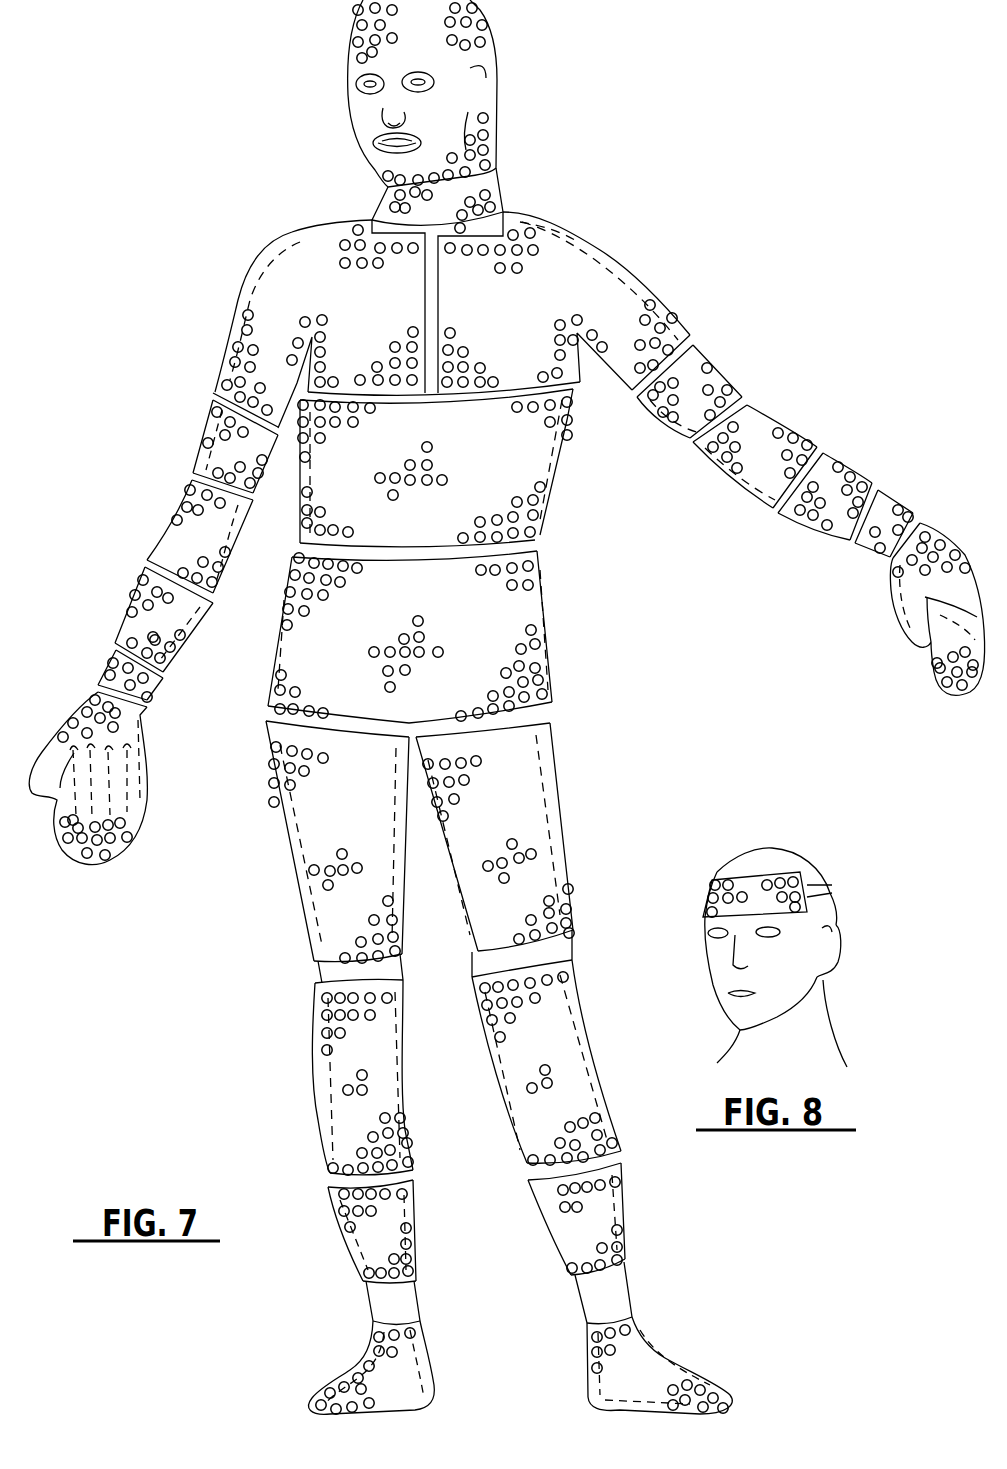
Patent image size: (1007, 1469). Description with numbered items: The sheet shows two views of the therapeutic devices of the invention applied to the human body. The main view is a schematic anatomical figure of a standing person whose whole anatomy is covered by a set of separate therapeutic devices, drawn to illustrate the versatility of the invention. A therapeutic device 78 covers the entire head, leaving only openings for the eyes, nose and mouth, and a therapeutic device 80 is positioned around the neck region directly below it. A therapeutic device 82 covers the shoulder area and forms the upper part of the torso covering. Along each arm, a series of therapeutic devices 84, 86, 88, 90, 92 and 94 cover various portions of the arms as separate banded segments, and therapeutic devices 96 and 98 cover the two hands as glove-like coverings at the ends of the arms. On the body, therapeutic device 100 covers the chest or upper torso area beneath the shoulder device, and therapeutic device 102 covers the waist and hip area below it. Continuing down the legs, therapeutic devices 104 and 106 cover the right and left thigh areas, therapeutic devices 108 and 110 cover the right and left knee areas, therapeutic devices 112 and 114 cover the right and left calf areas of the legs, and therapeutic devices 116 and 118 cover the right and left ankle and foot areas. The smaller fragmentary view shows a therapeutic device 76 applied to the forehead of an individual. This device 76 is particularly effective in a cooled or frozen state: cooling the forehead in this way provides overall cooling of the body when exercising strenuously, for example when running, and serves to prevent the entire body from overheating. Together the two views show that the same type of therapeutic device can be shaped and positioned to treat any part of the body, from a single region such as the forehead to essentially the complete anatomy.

In FIG. 8, the therapeutic device 76 is at (763, 875).
In FIG. 7, the therapeutic device 78 is at (493, 35).
In FIG. 7, the therapeutic device 80 is at (495, 200).
In FIG. 7, the therapeutic device 82 is at (632, 262).
In FIG. 7, the therapeutic device 84 is at (717, 365).
In FIG. 7, the therapeutic device 86 is at (205, 442).
In FIG. 7, the therapeutic device 88 is at (782, 418).
In FIG. 7, the therapeutic device 90 is at (165, 522).
In FIG. 7, the therapeutic device 92 is at (843, 462).
In FIG. 7, the therapeutic device 94 is at (893, 498).
In FIG. 7, the therapeutic device 96 is at (900, 625).
In FIG. 7, the therapeutic device 98 is at (150, 776).
In FIG. 7, the therapeutic device 100 is at (545, 512).
In FIG. 7, the therapeutic device 102 is at (555, 652).
In FIG. 7, the therapeutic device 104 is at (285, 877).
In FIG. 7, the therapeutic device 106 is at (562, 843).
In FIG. 7, the therapeutic device 108 is at (318, 1080).
In FIG. 7, the therapeutic device 110 is at (576, 1010).
In FIG. 7, the therapeutic device 112 is at (345, 1248).
In FIG. 7, the therapeutic device 114 is at (627, 1212).
In FIG. 7, the therapeutic device 116 is at (355, 1360).
In FIG. 7, the therapeutic device 118 is at (665, 1355).